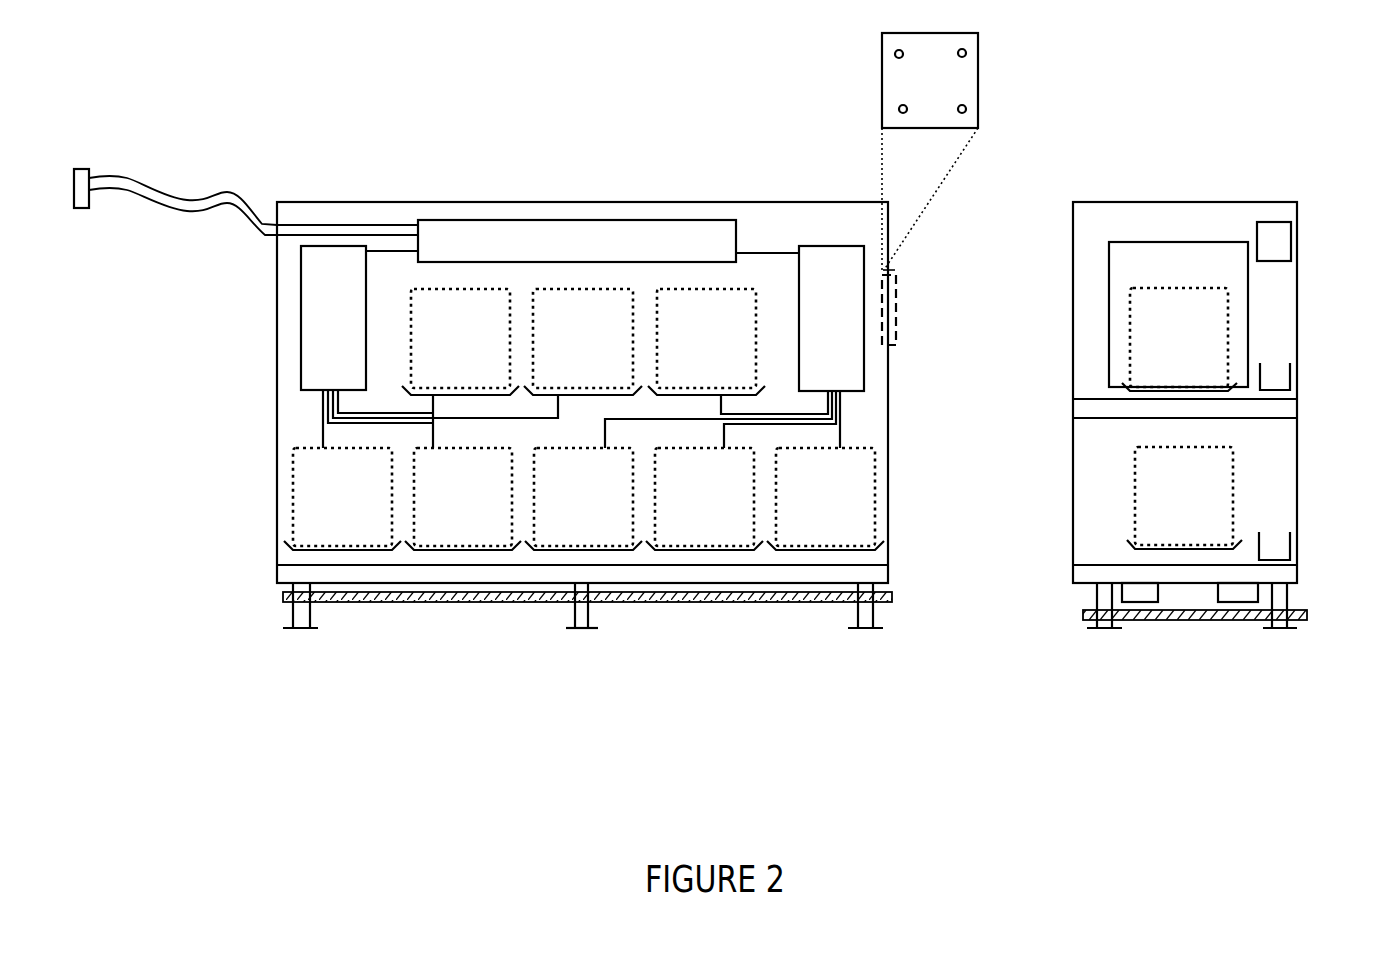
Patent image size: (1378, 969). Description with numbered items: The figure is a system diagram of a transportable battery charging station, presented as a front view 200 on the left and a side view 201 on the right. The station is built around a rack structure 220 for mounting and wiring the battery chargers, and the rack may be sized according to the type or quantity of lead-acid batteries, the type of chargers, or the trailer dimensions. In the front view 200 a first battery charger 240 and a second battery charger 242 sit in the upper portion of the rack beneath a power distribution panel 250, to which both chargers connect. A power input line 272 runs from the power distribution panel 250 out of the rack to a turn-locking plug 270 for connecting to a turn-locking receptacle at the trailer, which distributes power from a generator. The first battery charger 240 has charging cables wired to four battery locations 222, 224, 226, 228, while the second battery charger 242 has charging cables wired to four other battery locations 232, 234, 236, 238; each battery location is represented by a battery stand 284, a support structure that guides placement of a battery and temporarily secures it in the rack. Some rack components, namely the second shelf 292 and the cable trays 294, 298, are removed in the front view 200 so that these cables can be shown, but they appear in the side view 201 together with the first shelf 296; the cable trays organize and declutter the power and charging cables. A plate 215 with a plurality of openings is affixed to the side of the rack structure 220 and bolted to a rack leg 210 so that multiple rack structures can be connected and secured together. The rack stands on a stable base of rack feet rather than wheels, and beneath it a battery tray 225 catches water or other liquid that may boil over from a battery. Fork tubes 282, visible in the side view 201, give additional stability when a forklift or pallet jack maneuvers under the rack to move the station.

The front view 200 is at (336, 100).
The side view 201 is at (1055, 137).
The rack leg 210 is at (865, 630).
The plate 215 is at (913, 92).
The rack structure 220 is at (888, 400).
The battery location 222 is at (443, 350).
The battery location 224 is at (566, 350).
The battery tray 225 is at (537, 602).
The battery location 226 is at (325, 508).
The battery location 228 is at (446, 508).
The battery location 232 is at (689, 350).
The battery location 234 is at (566, 508).
The battery location 236 is at (687, 508).
The battery location 238 is at (808, 508).
The first battery charger 240 is at (316, 327).
The second battery charger 242 is at (814, 327).
The power distribution panel 250 is at (560, 254).
The turn-locking plug 270 is at (83, 169).
The power input line 272 is at (176, 188).
The fork tubes 282 is at (1217, 602).
The battery stand 284 is at (367, 550).
The second shelf 292 is at (1297, 407).
The cable tray 294 is at (1292, 383).
The first shelf 296 is at (1297, 572).
The cable tray 298 is at (1290, 540).